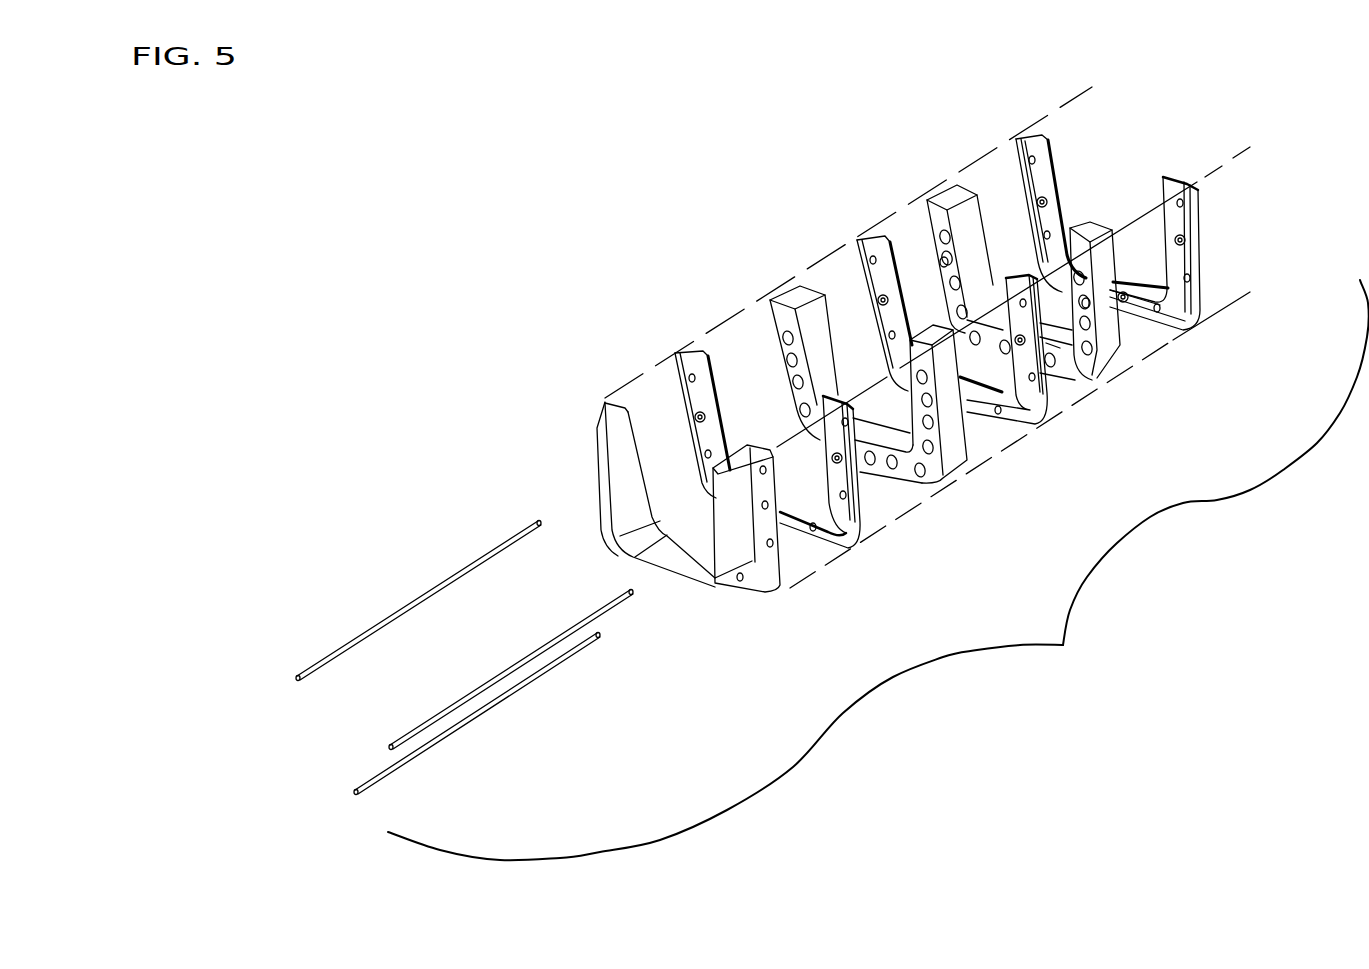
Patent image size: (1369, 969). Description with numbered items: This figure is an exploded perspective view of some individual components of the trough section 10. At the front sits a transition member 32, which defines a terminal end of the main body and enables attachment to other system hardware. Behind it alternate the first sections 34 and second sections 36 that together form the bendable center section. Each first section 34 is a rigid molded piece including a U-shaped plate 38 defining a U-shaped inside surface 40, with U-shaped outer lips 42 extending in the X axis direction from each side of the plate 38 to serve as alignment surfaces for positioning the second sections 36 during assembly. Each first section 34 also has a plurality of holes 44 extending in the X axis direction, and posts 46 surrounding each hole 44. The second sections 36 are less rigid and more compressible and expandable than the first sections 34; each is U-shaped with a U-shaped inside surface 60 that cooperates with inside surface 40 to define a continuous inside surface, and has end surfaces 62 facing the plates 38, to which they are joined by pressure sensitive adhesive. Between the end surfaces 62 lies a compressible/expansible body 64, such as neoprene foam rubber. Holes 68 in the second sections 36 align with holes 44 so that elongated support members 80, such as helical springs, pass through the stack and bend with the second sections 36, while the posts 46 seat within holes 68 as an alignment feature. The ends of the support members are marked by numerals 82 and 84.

The trough section 10 is at (878, 570).
The transition member 32 is at (790, 572).
The first section 34 is at (1018, 137).
The second section 36 is at (790, 289).
The U-shaped plate 38 is at (1038, 150).
The U-shaped inside surface 40 is at (1050, 158).
The outer lip 42 is at (1200, 213).
The hole 44 is at (1037, 203).
The post 46 is at (1122, 293).
The U-shaped inside surface 60 is at (1052, 345).
The end surface 62 is at (1094, 366).
The compressible/expansible body 64 is at (776, 294).
The hole 68 is at (943, 261).
The elongated support member 80 is at (450, 583).
The rod first end 82 is at (298, 680).
The rod second end 84 is at (540, 521).